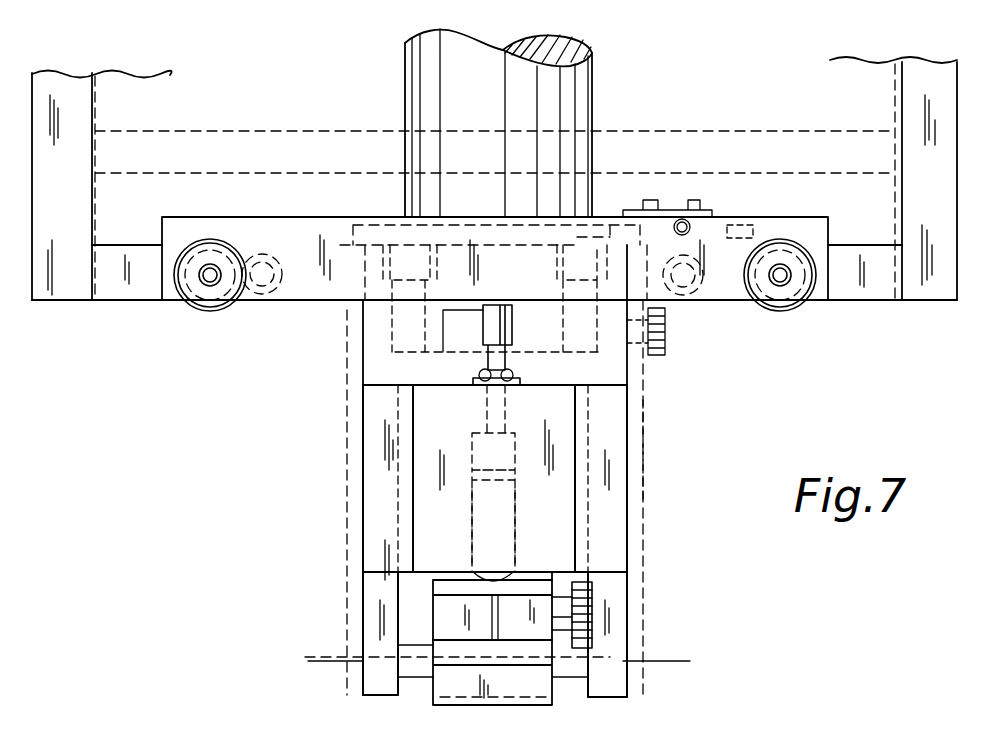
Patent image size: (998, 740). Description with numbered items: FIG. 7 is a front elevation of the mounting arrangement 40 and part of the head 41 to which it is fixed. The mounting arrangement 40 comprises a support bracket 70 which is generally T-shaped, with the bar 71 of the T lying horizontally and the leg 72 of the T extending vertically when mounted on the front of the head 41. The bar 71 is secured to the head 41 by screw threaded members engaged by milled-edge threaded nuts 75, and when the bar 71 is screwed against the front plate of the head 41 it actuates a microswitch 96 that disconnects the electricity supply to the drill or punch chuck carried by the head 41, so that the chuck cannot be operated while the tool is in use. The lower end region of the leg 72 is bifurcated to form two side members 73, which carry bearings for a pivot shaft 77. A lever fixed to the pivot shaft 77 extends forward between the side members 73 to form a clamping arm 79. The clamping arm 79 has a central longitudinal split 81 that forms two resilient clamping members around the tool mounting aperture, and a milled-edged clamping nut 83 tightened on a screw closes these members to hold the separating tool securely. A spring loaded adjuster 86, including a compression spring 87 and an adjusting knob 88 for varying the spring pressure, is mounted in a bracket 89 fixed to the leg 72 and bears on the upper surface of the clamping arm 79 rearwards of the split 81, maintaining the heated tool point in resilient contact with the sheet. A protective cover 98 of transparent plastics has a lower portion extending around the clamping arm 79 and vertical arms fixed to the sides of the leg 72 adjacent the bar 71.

The mounting arrangement 40 is at (686, 425).
The head 41 is at (885, 107).
The support bracket 70 is at (633, 372).
The bar 71 is at (298, 293).
The leg 72 is at (373, 422).
The side members 73 is at (380, 605).
The milled-edge threaded nuts 75 is at (212, 311).
The pivot shaft 77 is at (408, 667).
The clamping arm 79 is at (555, 703).
The split 81 is at (490, 616).
The milled-edged clamping nut 83 is at (587, 602).
The spring loaded adjuster 86 is at (466, 455).
The compression spring 87 is at (518, 532).
The adjusting knob 88 is at (490, 323).
The bracket 89 is at (560, 465).
The microswitch 96 is at (712, 217).
The protective cover 98 is at (633, 445).